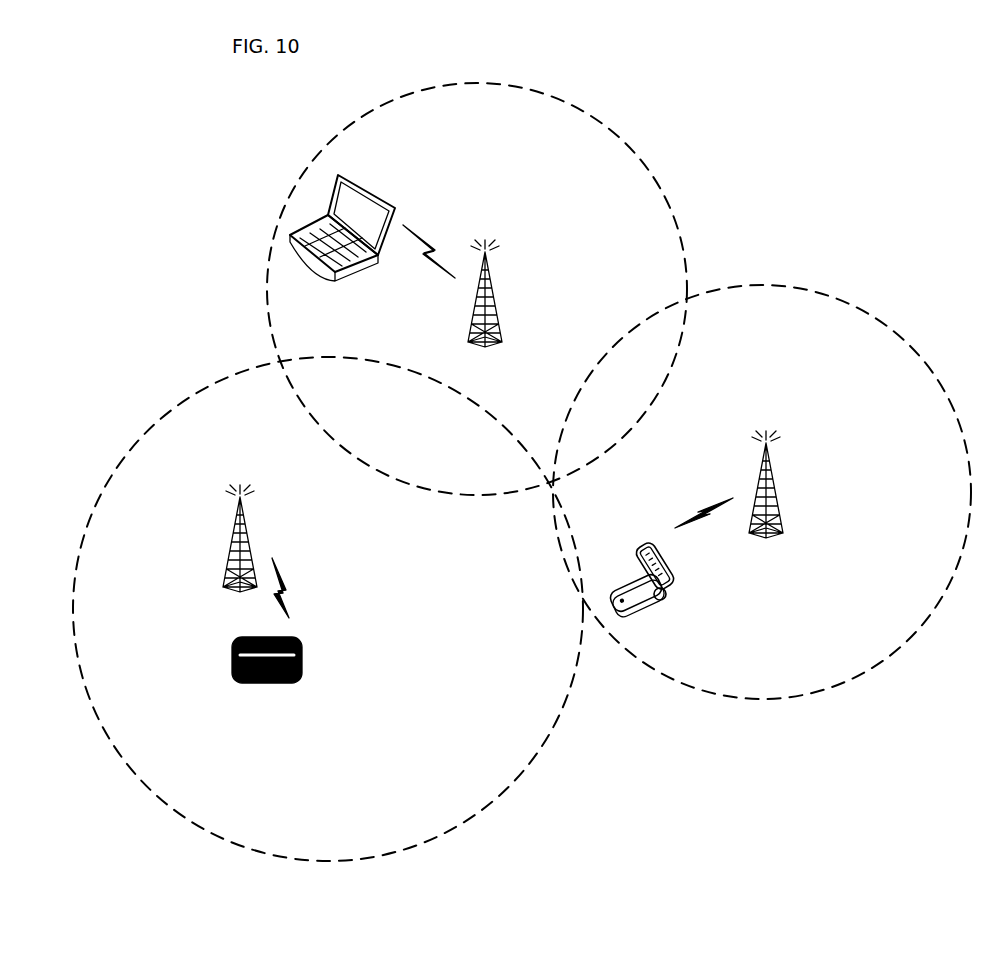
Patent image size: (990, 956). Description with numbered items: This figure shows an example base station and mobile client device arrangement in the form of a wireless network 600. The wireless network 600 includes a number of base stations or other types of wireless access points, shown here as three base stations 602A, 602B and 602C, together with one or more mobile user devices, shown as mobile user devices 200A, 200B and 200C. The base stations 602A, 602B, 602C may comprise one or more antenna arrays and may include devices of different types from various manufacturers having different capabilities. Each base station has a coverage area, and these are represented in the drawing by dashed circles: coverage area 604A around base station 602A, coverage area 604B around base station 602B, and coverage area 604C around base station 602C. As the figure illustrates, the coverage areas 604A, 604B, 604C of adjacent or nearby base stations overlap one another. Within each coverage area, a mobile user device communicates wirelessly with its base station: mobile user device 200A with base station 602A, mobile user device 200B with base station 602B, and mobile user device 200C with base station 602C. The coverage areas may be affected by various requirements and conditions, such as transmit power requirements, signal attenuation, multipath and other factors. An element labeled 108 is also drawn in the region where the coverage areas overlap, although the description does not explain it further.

The wireless network 600 is at (188, 94).
The coverage area 604A is at (180, 408).
The coverage area 604B is at (624, 141).
The coverage area 604C is at (902, 343).
The base station 602A is at (248, 529).
The base station 602B is at (498, 299).
The base station 602C is at (775, 489).
The mobile user device 200A is at (304, 640).
The mobile user device 200B is at (369, 180).
The mobile user device 200C is at (668, 596).
The network 108 is at (604, 393).